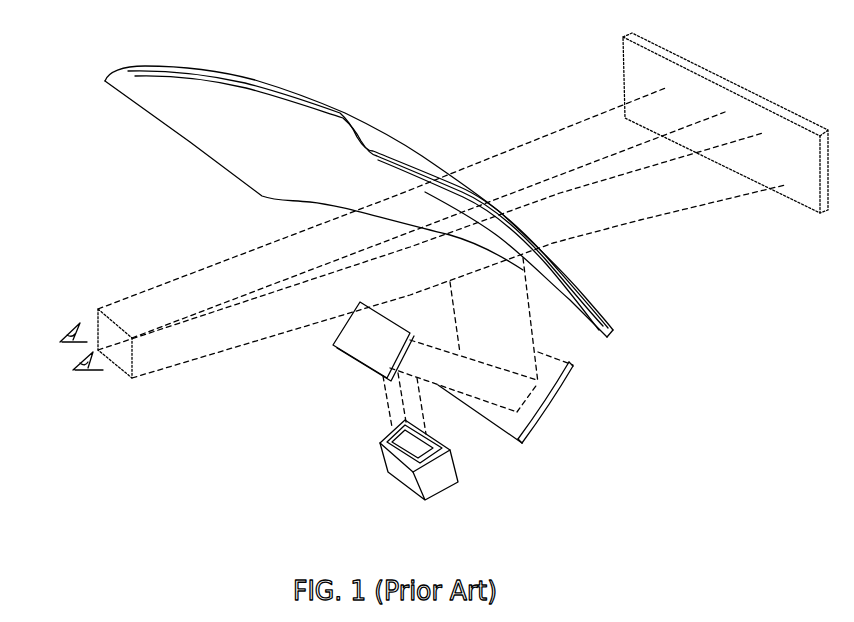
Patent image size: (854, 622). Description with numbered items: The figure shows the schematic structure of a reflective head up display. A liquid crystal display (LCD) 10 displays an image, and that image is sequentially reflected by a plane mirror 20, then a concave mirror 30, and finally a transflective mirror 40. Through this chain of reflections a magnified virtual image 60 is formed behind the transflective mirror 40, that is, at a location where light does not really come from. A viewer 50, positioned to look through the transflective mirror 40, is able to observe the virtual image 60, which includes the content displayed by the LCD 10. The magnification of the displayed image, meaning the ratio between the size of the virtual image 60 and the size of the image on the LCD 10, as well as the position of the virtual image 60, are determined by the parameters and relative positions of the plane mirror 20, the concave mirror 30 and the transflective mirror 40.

The liquid crystal display (LCD) 10 is at (397, 475).
The plane mirror 20 is at (360, 351).
The concave mirror 30 is at (542, 399).
The transflective mirror 40 is at (583, 297).
The viewer 50 is at (87, 341).
The virtual image 60 is at (633, 70).